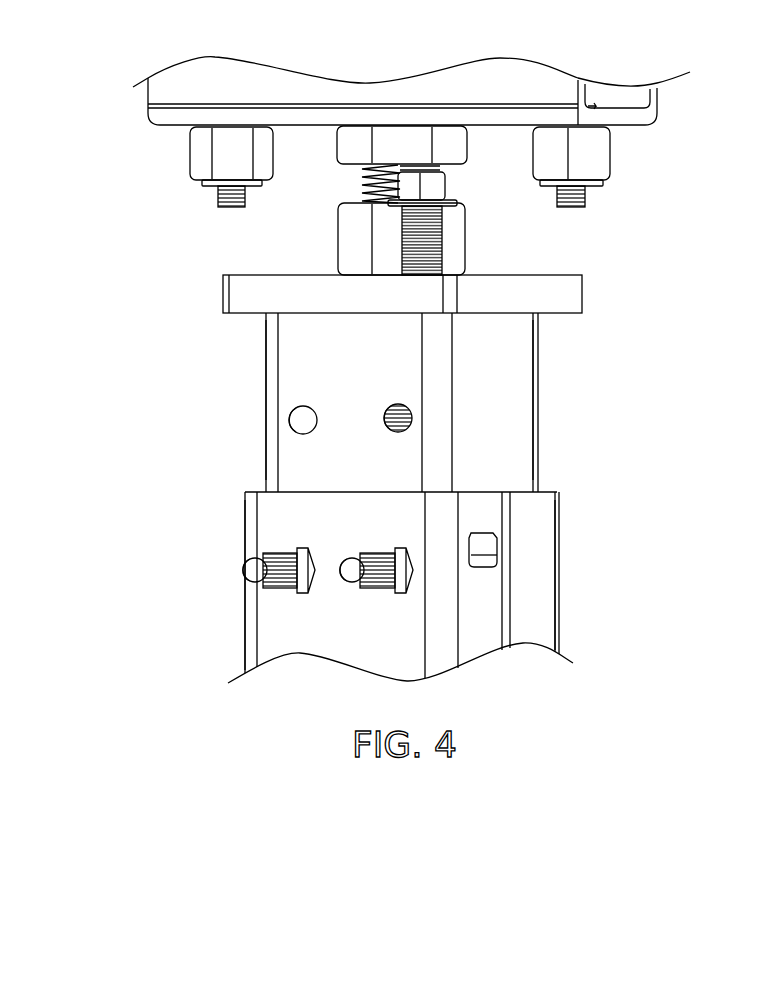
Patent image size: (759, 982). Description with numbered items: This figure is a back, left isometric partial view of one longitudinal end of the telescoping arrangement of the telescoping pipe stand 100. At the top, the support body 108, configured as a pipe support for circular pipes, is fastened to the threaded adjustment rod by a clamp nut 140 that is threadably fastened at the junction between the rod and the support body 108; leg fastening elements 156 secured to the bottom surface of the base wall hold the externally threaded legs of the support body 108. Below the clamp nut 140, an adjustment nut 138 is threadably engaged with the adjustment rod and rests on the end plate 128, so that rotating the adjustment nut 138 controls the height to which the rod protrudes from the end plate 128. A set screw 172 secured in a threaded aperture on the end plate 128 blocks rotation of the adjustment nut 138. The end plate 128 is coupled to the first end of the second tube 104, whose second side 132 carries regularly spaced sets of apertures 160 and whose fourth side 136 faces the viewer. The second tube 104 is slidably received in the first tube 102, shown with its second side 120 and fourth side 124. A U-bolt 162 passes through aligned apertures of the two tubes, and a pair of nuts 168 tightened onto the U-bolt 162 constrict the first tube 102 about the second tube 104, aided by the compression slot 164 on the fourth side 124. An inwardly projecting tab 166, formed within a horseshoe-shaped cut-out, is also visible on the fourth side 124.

The telescoping pipe stand 100 is at (574, 52).
The first tube 102 is at (572, 504).
The second tube 104 is at (548, 380).
The support body 108 is at (668, 100).
The second side 120 is at (270, 641).
The fourth side 124 is at (548, 629).
The end plate 128 is at (563, 299).
The second side 132 is at (294, 373).
The fourth side 136 is at (515, 442).
The adjustment nut 138 is at (350, 238).
The clamp nut 140 is at (342, 137).
The leg fastening element 156 is at (197, 153).
The apertures 160 is at (290, 425).
The U-bolt 162 is at (248, 571).
The compression slot 164 is at (508, 589).
The inwardly projecting tab 166 is at (488, 540).
The nuts 168 is at (302, 586).
The set screw 172 is at (428, 246).